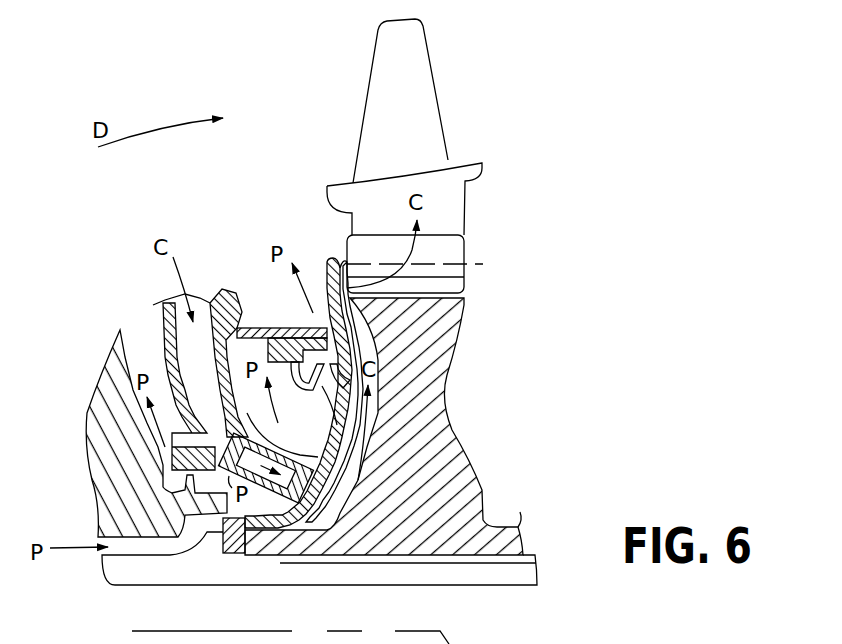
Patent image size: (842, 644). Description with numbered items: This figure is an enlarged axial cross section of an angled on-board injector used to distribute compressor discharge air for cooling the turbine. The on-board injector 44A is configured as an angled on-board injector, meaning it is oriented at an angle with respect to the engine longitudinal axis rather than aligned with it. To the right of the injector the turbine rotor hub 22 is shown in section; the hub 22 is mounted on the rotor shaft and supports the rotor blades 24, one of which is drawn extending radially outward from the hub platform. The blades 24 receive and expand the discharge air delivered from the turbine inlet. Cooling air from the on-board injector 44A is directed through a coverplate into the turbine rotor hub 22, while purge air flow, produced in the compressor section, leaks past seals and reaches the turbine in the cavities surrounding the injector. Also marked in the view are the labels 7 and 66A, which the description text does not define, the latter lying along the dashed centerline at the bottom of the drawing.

The rotor blades 24 is at (425, 108).
The turbine rotor hub 22 is at (437, 450).
The on-board injector 44A is at (155, 340).
The cooling channel 7 is at (217, 418).
The engine axis 66A is at (254, 637).